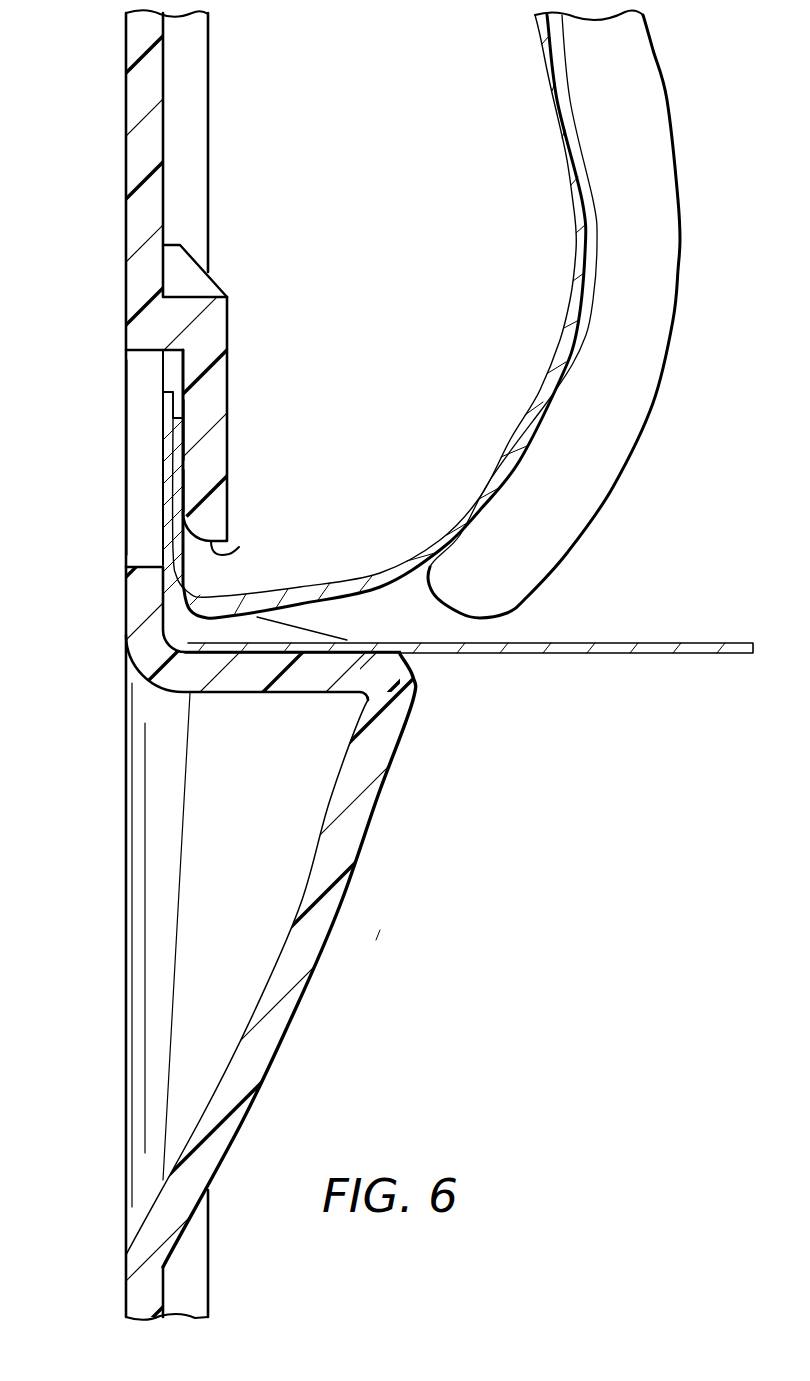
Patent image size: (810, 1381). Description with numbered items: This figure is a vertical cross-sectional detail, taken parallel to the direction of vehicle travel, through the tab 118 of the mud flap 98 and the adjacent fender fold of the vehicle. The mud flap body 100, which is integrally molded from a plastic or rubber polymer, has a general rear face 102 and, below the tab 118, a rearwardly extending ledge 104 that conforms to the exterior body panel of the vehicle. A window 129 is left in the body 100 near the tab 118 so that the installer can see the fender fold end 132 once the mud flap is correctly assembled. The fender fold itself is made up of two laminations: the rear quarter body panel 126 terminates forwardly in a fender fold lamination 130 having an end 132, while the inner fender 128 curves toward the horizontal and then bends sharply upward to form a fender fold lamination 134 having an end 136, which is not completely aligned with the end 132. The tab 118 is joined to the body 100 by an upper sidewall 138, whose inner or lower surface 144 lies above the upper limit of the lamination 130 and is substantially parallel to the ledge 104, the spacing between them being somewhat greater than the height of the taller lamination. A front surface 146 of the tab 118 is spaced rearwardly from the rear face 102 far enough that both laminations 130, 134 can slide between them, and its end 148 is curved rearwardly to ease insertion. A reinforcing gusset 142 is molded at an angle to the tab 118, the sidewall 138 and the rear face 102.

The mud flap 98 is at (386, 925).
The mud flap body 100 is at (394, 790).
The general rear face 102 is at (188, 481).
The ledge 104 is at (217, 641).
The tab 118 is at (243, 358).
The body panel 126 is at (565, 657).
The inner fender 128 is at (452, 528).
The window 129 is at (143, 477).
The fender fold lamination 130 is at (163, 540).
The fender fold end 132 is at (163, 406).
The fender fold lamination 134 is at (186, 568).
The end 136 is at (190, 428).
The upper sidewall 138 is at (213, 312).
The reinforcing gusset 142 is at (210, 277).
The inner or lower surface 144 is at (144, 350).
The front surface 146 is at (183, 370).
The end 148 is at (239, 547).